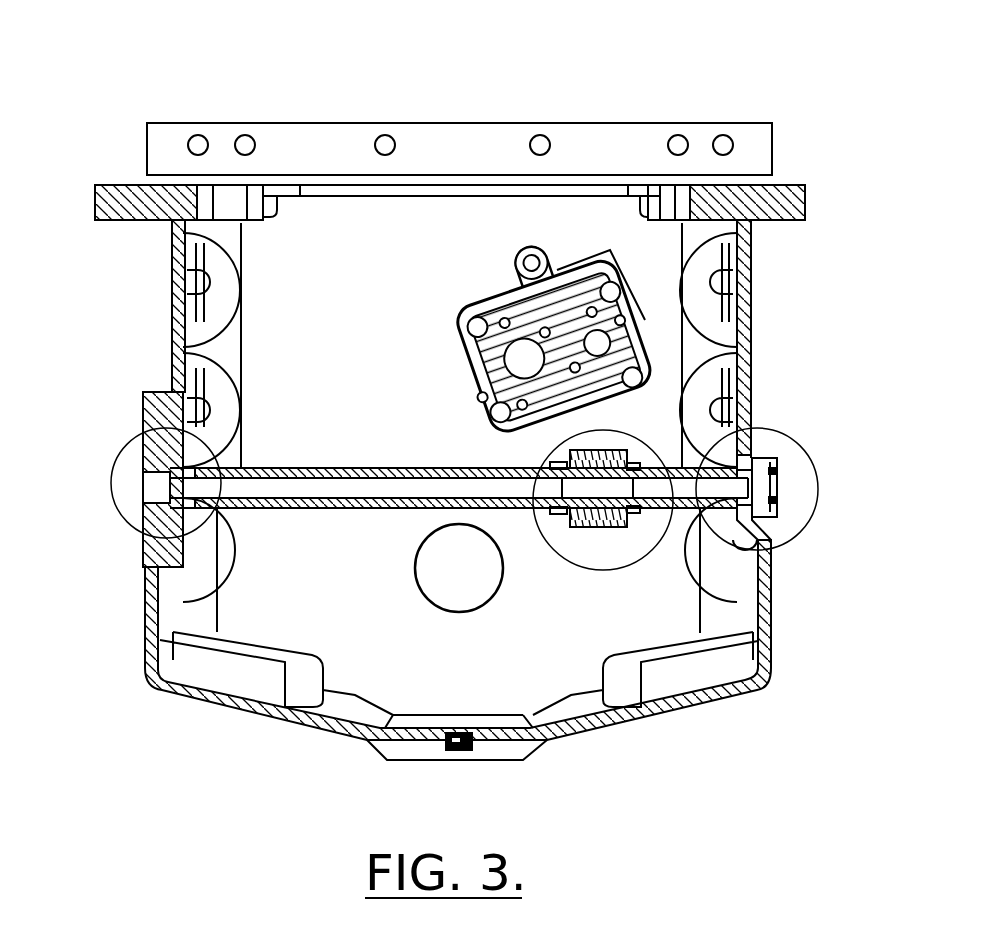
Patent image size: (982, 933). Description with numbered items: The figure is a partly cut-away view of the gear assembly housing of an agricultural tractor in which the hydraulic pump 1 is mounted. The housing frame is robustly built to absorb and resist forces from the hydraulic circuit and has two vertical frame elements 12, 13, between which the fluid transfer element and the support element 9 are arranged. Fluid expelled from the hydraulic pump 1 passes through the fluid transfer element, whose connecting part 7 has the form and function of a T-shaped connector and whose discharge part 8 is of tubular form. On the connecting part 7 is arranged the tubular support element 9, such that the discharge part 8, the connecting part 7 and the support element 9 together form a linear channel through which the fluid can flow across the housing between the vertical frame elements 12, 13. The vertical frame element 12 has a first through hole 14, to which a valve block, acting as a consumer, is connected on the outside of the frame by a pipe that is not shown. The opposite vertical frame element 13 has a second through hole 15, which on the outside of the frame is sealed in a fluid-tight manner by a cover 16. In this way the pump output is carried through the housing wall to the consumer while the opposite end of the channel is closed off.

The hydraulic pump 1 is at (490, 288).
The connecting part 7 is at (603, 455).
The discharge part 8 is at (262, 460).
The support element 9 is at (670, 470).
The vertical frame element 12 is at (177, 295).
The vertical frame element 13 is at (752, 320).
The first through hole 14 is at (152, 487).
The second through hole 15 is at (763, 493).
The cover 16 is at (777, 478).